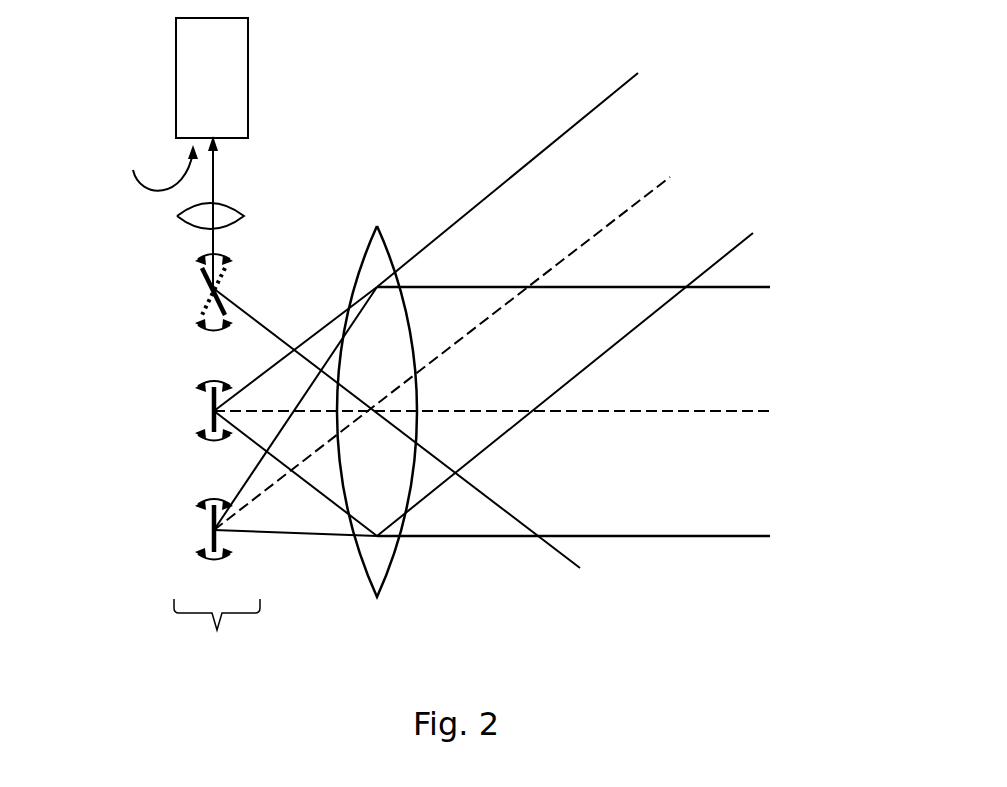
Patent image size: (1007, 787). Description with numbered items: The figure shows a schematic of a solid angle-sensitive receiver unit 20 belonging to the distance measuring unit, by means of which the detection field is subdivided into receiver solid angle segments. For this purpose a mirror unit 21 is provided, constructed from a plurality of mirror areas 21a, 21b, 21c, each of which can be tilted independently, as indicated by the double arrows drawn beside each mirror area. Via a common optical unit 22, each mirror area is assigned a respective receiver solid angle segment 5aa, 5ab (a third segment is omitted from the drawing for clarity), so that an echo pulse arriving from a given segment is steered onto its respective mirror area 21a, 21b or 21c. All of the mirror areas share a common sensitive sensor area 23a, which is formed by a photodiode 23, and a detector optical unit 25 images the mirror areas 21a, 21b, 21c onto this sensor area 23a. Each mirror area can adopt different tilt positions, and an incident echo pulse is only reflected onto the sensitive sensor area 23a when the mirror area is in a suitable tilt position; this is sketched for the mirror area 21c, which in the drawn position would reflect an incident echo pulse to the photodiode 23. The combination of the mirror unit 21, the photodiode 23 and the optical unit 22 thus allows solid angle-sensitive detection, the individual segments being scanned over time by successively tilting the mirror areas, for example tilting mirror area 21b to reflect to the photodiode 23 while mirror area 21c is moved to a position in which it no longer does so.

The receiver unit 20 is at (406, 141).
The mirror unit 21 is at (217, 641).
The mirror area 21a is at (236, 546).
The mirror area 21b is at (206, 412).
The mirror area 21c is at (206, 288).
The optical unit 22 is at (375, 566).
The photodiode 23 is at (200, 75).
The sensitive sensor area 23a is at (155, 164).
The detector optical unit 25 is at (223, 212).
The receiver solid angle segment 5aa is at (670, 510).
The receiver solid angle segment 5ab is at (580, 167).